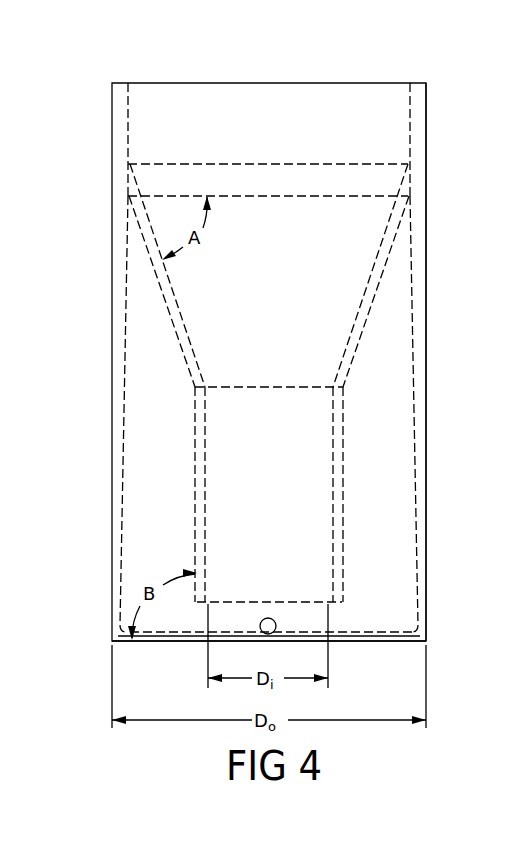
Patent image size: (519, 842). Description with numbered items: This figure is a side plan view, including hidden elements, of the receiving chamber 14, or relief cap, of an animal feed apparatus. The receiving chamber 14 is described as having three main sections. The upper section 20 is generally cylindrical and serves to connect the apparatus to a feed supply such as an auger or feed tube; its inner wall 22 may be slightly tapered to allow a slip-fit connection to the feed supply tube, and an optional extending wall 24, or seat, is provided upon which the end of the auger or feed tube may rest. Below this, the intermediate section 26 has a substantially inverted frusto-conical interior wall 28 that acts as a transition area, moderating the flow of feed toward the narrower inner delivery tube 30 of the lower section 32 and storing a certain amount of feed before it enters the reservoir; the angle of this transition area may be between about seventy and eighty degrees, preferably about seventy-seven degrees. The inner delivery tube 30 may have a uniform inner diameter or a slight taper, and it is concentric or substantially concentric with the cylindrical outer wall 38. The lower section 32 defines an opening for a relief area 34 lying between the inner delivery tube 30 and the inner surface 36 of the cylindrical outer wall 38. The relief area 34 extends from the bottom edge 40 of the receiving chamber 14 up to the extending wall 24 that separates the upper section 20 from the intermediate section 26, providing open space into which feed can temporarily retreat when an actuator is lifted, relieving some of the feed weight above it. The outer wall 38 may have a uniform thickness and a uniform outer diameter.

The receiving chamber 14 is at (452, 126).
The upper section 20 is at (98, 85).
The inner wall 22 is at (408, 118).
The extending wall 24 is at (398, 164).
The intermediate section 26 is at (98, 197).
The interior wall 28 is at (372, 298).
The inner delivery tube 30 is at (337, 497).
The lower section 32 is at (98, 384).
The relief area 34 is at (382, 463).
The inner surface 36 is at (418, 607).
The cylindrical outer wall 38 is at (422, 404).
The bottom edge 40 is at (452, 641).